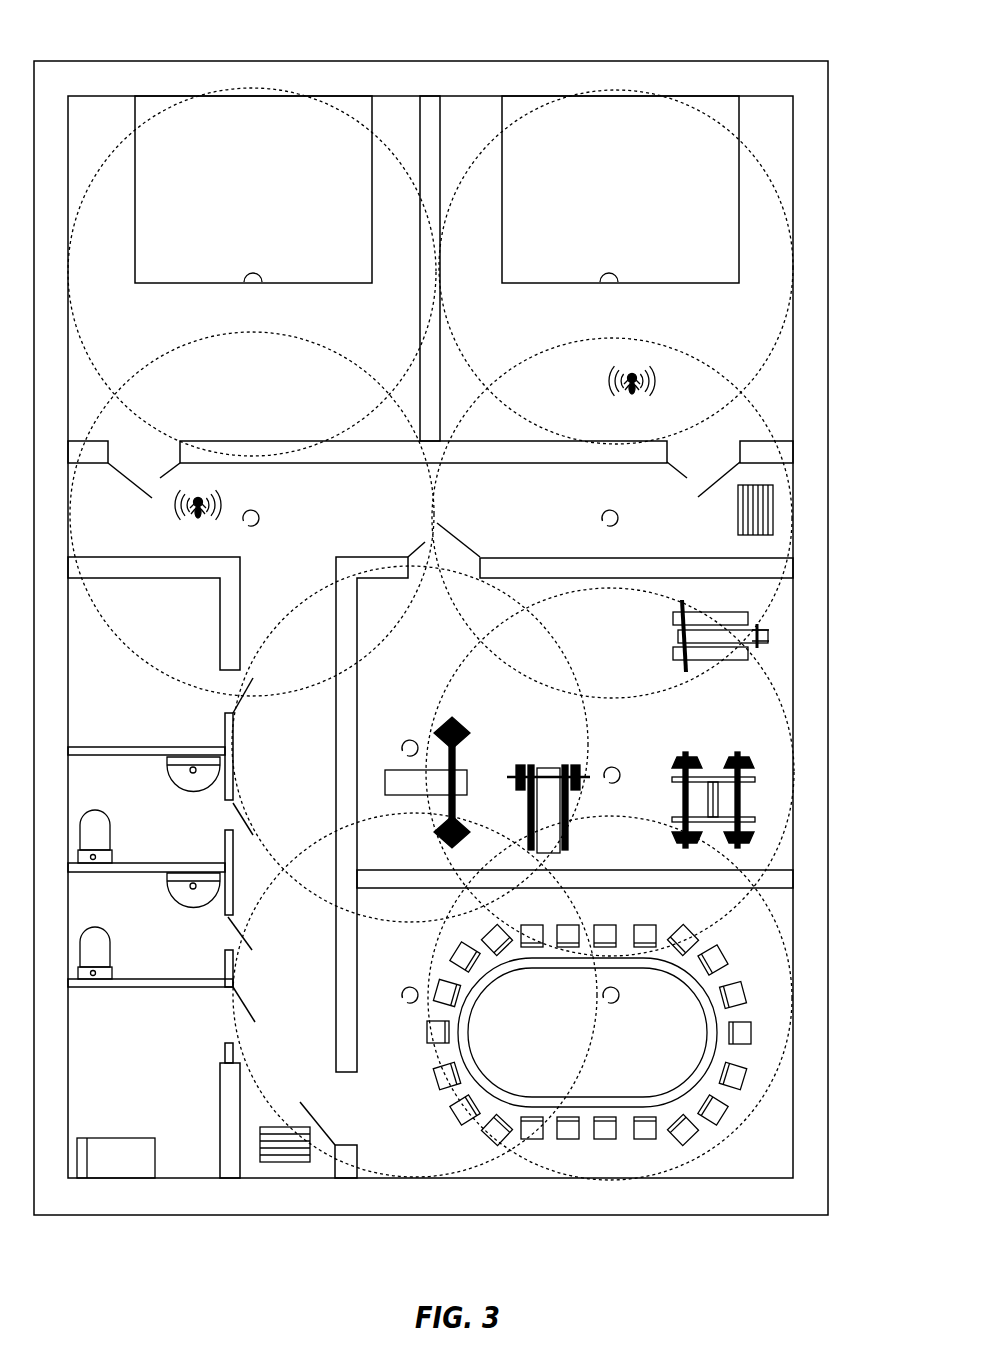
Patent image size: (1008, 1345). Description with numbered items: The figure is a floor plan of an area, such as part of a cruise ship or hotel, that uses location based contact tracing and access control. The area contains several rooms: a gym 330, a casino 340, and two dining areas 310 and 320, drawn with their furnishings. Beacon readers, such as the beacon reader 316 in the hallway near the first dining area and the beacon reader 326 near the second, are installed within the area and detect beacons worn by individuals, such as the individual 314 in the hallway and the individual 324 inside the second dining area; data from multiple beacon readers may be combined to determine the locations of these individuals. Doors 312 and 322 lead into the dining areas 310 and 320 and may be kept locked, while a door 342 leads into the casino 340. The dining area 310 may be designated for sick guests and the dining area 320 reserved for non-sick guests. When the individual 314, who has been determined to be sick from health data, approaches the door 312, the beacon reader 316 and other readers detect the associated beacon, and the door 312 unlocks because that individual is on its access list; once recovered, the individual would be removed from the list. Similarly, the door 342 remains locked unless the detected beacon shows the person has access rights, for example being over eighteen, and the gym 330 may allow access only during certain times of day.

The dining area 310 is at (335, 98).
The dining area 320 is at (747, 103).
The door 312 is at (140, 490).
The individual 314 is at (197, 520).
The beacon reader 316 is at (253, 517).
The door 322 is at (695, 493).
The individual 324 is at (623, 399).
The beacon reader 326 is at (598, 513).
The gym 330 is at (782, 650).
The casino 340 is at (790, 922).
The door 342 is at (335, 1072).